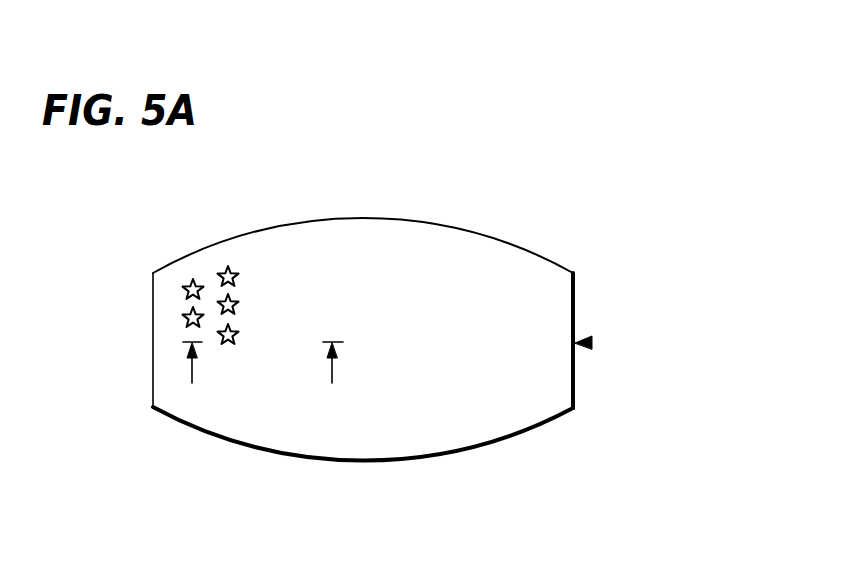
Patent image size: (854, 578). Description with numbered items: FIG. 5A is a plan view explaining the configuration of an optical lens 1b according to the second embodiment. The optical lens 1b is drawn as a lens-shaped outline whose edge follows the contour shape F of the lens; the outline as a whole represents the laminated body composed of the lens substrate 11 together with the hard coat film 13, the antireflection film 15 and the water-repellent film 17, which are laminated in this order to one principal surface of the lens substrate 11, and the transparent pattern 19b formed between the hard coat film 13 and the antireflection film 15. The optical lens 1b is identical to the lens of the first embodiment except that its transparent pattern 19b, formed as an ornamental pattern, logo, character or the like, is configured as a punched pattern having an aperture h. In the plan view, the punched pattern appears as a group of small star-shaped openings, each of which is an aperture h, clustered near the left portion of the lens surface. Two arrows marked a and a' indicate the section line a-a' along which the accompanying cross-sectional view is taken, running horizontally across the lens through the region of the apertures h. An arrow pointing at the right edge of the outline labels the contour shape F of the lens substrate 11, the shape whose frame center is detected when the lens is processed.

The optical lens 1b is at (416, 321).
The lens substrate 11 is at (416, 376).
The hard coat film 13 is at (363, 339).
The antireflection film 15 is at (363, 339).
The water-repellent film 17 is at (363, 339).
The transparent pattern 19b is at (502, 447).
The aperture h is at (192, 279).
The line a-a' a is at (192, 375).
The line a- a' is at (334, 375).
The contour shape F is at (592, 342).